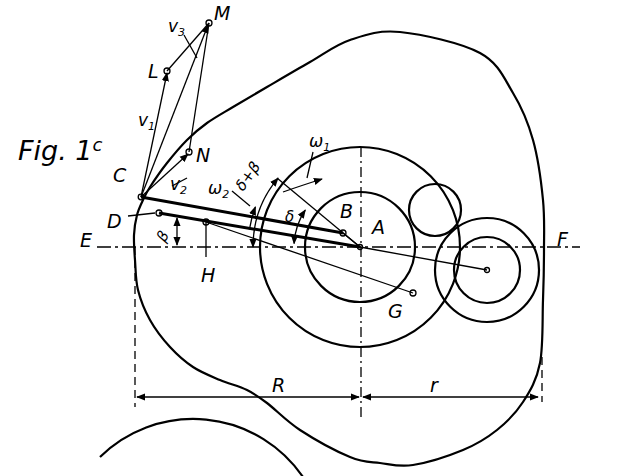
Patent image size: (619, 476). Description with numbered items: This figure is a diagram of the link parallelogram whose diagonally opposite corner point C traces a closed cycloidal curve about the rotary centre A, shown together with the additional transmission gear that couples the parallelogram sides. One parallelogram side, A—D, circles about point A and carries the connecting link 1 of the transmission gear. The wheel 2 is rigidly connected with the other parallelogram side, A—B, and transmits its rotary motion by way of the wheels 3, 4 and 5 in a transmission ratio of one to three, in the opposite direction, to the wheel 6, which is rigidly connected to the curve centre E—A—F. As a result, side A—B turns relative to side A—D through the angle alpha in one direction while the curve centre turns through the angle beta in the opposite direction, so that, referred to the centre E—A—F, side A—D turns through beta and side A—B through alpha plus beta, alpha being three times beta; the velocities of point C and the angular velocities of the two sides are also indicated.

The connecting link 1 is at (430, 260).
The wheel 2 is at (385, 198).
The wheel 3 is at (448, 186).
The wheel 4 is at (503, 218).
The wheel 5 is at (493, 302).
The wheel 6 is at (415, 329).